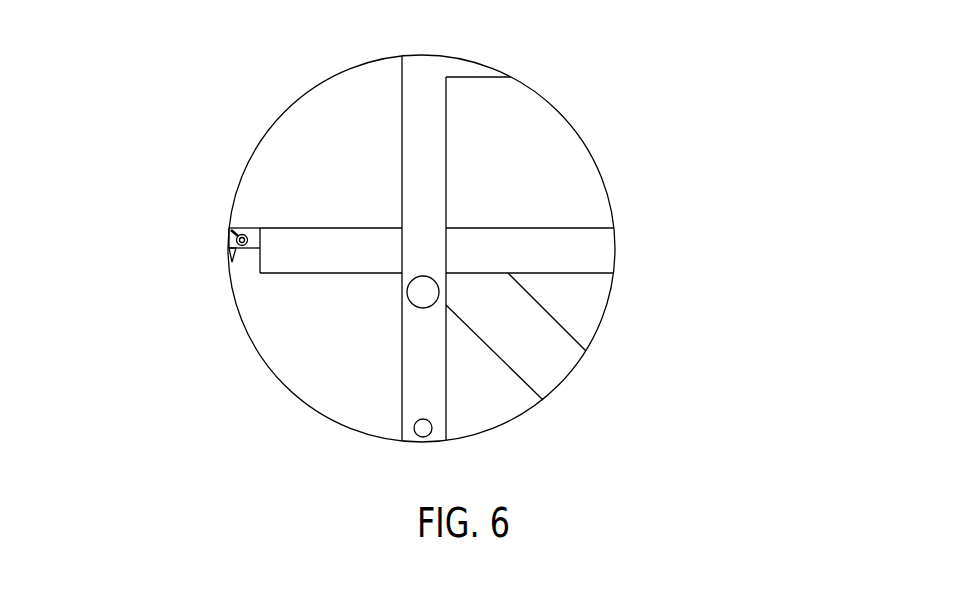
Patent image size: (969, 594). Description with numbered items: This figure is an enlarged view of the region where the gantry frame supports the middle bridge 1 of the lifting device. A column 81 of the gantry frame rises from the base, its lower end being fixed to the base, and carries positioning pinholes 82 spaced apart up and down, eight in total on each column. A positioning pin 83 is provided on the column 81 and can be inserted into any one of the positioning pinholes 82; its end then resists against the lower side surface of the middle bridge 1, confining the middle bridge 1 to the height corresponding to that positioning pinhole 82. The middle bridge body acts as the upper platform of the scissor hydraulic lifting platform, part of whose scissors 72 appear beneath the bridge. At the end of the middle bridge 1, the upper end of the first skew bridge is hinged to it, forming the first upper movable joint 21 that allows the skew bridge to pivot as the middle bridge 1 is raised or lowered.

The middle bridge 1 is at (582, 245).
The first upper movable joint 21 is at (253, 237).
The scissors 72 is at (512, 348).
The column 81 is at (418, 88).
The positioning pinhole 82 is at (419, 431).
The positioning pin 83 is at (422, 296).